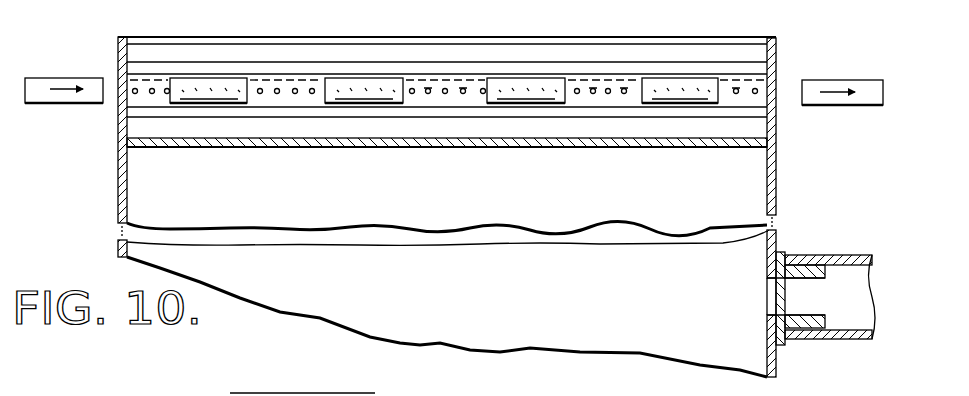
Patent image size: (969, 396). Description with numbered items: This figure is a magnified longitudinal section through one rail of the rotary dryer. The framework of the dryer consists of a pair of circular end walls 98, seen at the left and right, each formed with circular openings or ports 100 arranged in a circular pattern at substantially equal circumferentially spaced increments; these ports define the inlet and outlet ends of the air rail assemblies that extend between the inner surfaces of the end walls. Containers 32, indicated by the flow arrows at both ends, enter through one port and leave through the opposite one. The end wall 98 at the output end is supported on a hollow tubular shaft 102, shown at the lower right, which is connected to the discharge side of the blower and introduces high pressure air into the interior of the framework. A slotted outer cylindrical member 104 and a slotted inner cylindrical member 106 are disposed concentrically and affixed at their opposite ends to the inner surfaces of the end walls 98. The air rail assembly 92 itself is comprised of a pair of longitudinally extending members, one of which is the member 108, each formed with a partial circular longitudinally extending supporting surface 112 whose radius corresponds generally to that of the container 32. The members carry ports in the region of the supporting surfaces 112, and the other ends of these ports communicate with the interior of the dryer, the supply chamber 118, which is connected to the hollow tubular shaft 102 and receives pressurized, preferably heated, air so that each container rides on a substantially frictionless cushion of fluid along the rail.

The container 32 is at (53, 103).
The air rail assembly 92 is at (430, 105).
The circular end wall 98 is at (118, 178).
The circular opening or port 100 is at (118, 80).
The hollow tubular shaft 102 is at (834, 256).
The slotted outer cylindrical member 104 is at (500, 37).
The slotted inner cylindrical member 106 is at (438, 147).
The longitudinally extending member 108 is at (608, 104).
The supporting surface 112 is at (290, 80).
The supply chamber 118 is at (578, 198).